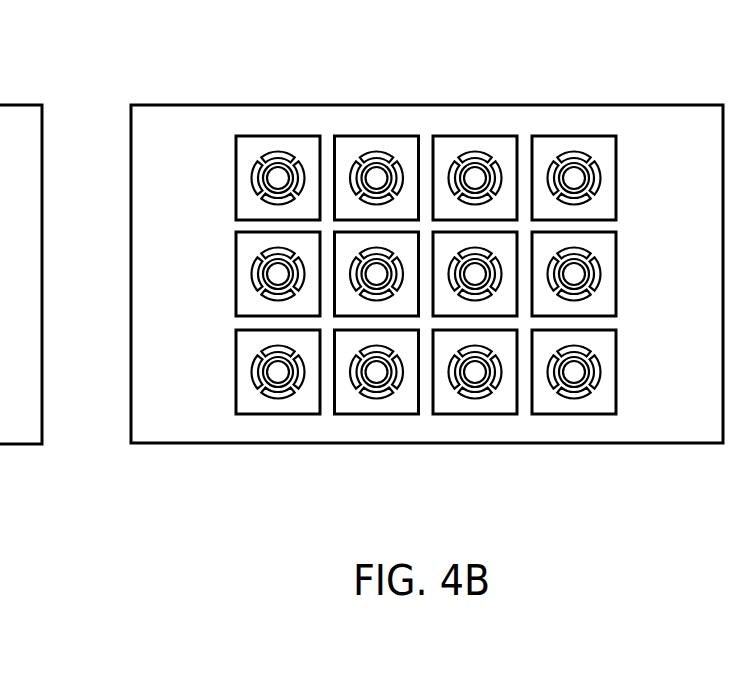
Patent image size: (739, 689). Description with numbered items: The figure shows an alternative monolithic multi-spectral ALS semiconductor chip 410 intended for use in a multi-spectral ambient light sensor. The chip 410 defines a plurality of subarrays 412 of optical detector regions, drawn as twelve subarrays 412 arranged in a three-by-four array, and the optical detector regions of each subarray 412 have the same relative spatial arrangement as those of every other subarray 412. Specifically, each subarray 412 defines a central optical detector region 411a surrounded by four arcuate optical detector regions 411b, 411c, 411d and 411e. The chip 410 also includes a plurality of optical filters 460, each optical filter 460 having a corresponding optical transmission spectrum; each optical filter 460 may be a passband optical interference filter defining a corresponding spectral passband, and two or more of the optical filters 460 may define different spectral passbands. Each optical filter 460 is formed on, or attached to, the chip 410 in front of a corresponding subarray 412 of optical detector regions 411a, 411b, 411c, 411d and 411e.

The alternative monolithic multi-spectral ALS semiconductor chip 410 is at (131, 428).
The subarray 412 is at (337, 281).
The optical filter 460 is at (508, 136).
The central optical detector region 411a is at (279, 176).
The arcuate optical detector region 411b is at (287, 150).
The arcuate optical detector region 411c is at (306, 173).
The arcuate optical detector region 411d is at (272, 204).
The arcuate optical detector region 411e is at (253, 180).